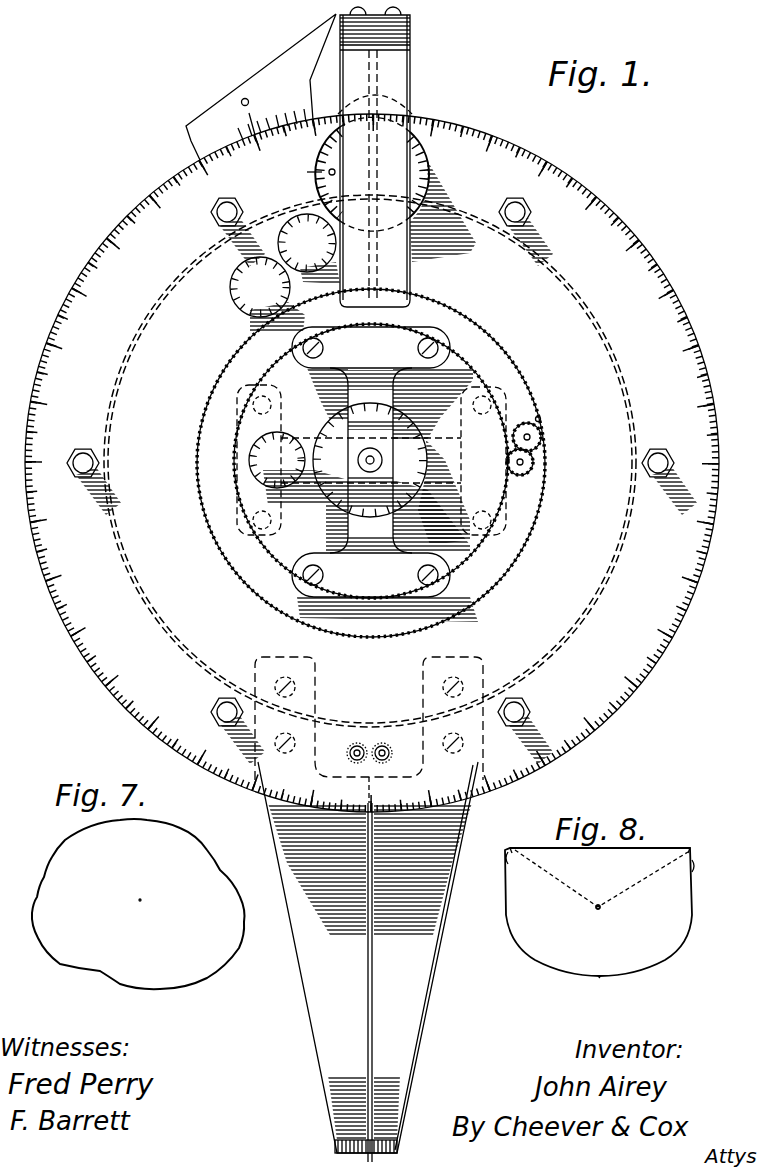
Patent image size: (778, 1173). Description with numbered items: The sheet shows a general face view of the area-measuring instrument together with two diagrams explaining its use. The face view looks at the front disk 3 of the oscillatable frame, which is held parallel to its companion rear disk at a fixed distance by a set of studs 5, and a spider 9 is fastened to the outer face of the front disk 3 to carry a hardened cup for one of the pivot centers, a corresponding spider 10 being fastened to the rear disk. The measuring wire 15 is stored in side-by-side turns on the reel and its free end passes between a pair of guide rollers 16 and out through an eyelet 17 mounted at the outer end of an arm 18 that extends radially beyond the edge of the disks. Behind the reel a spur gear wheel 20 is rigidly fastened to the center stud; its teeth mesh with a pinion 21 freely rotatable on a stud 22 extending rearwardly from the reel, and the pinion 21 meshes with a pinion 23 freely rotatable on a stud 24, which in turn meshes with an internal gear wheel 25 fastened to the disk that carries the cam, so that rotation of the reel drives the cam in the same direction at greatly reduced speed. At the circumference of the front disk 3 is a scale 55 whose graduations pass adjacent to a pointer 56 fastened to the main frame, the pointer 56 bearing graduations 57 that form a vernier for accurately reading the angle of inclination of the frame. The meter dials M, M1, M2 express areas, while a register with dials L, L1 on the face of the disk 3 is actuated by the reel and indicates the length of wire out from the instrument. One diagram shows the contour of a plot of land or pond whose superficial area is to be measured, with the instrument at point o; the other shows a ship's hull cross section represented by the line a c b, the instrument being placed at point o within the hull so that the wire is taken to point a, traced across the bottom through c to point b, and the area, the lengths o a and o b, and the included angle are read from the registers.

In FIG. 1, the front disk 3 is at (667, 356).
In FIG. 1, the studs 5 is at (83, 452).
In FIG. 1, the spider 9 is at (358, 510).
In FIG. 1, the spider 10 is at (237, 442).
In FIG. 1, the measuring wire 15 is at (563, 650).
In FIG. 1, the guide rollers 16 is at (382, 745).
In FIG. 1, the eyelet 17 is at (358, 1136).
In FIG. 1, the arm 18 is at (417, 994).
In FIG. 1, the spur gear wheel 20 is at (476, 368).
In FIG. 1, the pinion 21 is at (525, 480).
In FIG. 1, the stud 22 is at (545, 455).
In FIG. 1, the pinion 23 is at (540, 419).
In FIG. 1, the stud 24 is at (547, 432).
In FIG. 1, the internal gear wheel 25 is at (513, 569).
In FIG. 1, the scale 55 is at (612, 204).
In FIG. 1, the pointer 56 is at (218, 113).
In FIG. 1, the graduations 57 is at (262, 114).
In FIG. 1, the dial M is at (318, 170).
In FIG. 1, the dial M1 is at (294, 222).
In FIG. 1, the dial M2 is at (231, 290).
In FIG. 1, the dial L is at (414, 432).
In FIG. 1, the dial L1 is at (320, 436).
In FIG. 7, the point o is at (142, 905).
In FIG. 8, the point o is at (602, 895).
In FIG. 8, the point a is at (504, 840).
In FIG. 8, the point b is at (695, 837).
In FIG. 8, the point c is at (603, 988).